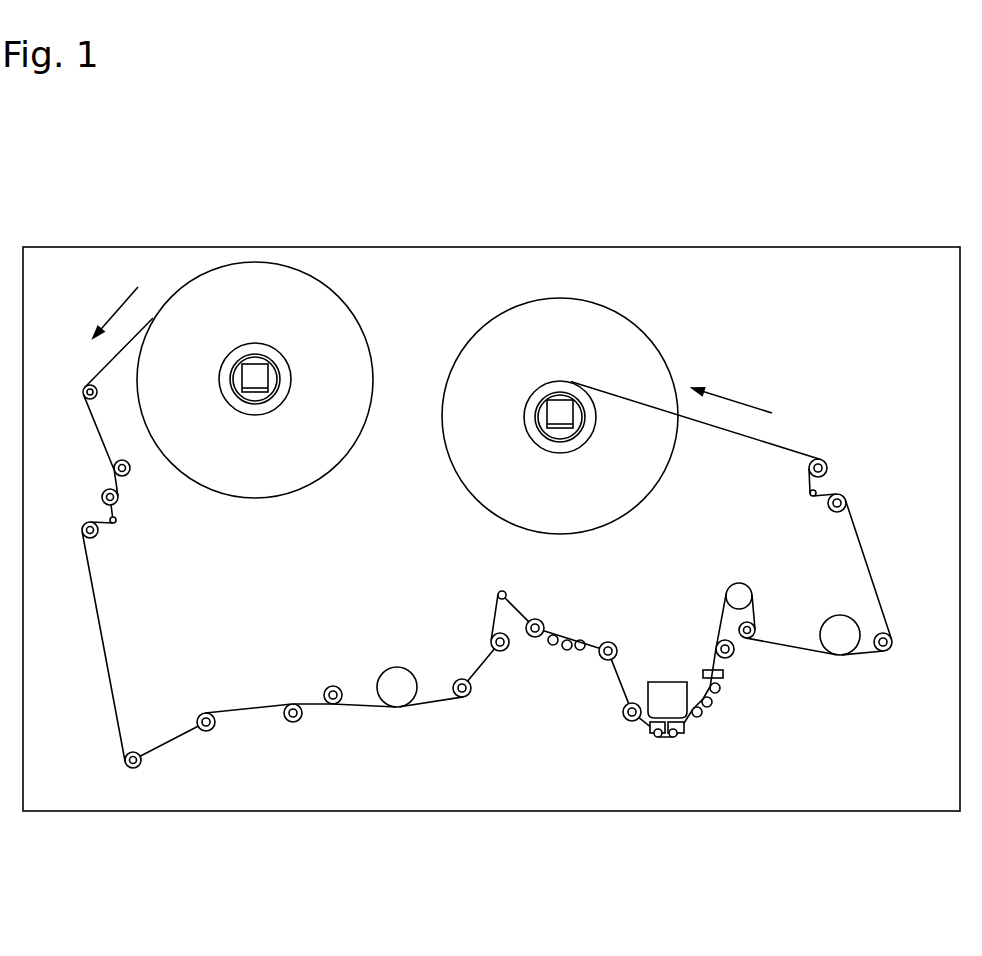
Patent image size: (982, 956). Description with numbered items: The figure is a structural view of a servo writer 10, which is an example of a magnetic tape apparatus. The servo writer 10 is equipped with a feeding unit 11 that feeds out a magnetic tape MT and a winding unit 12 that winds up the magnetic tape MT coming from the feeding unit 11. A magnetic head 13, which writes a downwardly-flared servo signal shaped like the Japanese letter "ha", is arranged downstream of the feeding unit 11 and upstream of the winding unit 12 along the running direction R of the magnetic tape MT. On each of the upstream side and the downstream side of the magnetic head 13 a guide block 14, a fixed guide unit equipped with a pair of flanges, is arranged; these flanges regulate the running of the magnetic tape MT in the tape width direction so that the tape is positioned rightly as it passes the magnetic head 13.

The servo writer 10 is at (380, 237).
The feeding unit 11 is at (218, 272).
The winding unit 12 is at (620, 315).
The magnetic head 13 is at (662, 735).
The guide block 14 is at (652, 733).
The magnetic tape MT is at (100, 377).
The running direction R is at (118, 302).